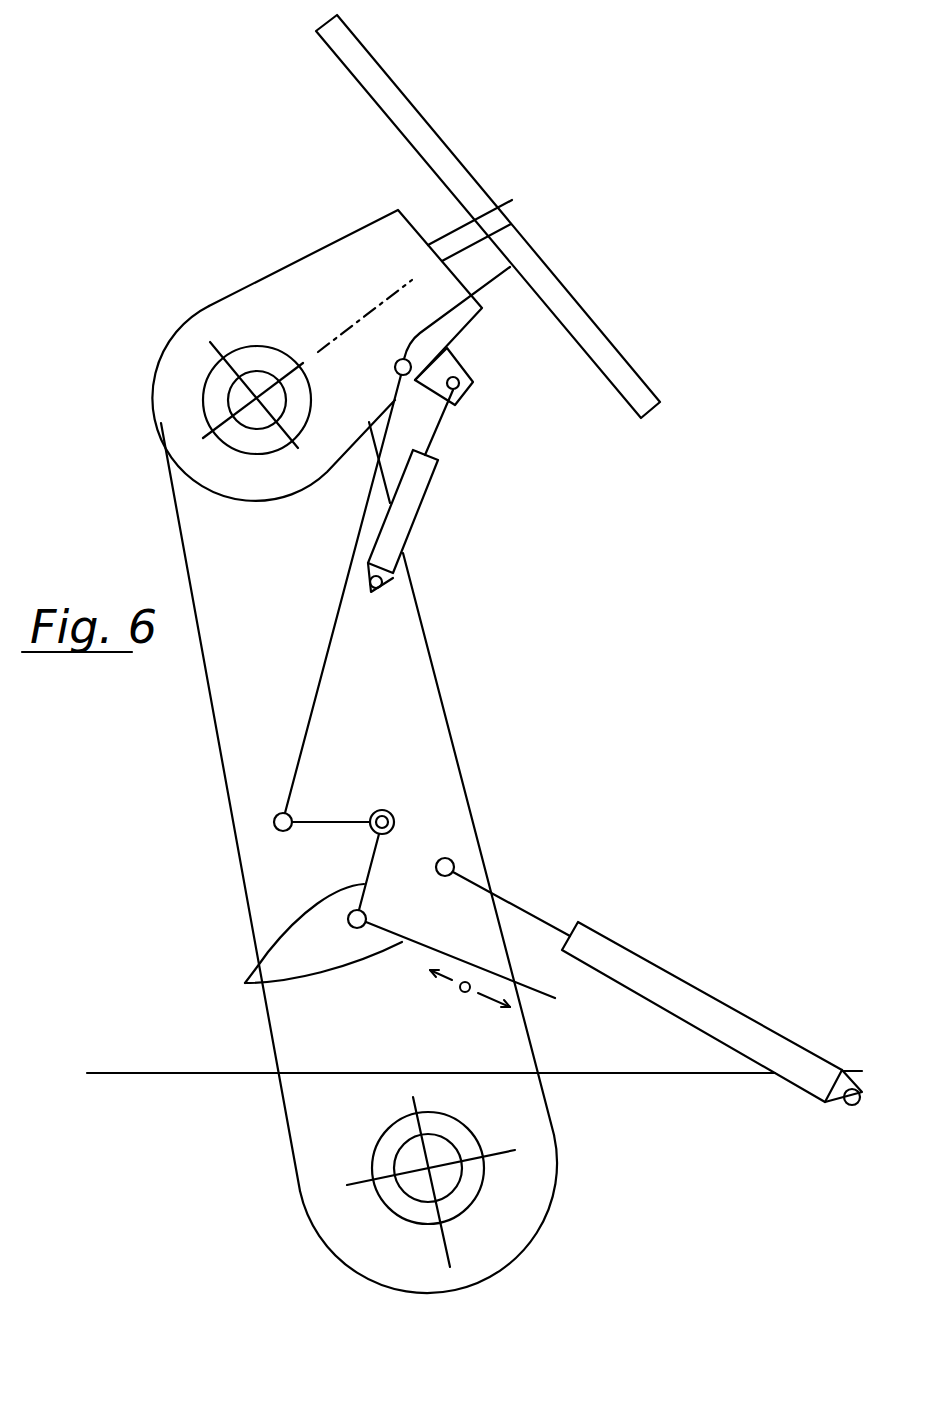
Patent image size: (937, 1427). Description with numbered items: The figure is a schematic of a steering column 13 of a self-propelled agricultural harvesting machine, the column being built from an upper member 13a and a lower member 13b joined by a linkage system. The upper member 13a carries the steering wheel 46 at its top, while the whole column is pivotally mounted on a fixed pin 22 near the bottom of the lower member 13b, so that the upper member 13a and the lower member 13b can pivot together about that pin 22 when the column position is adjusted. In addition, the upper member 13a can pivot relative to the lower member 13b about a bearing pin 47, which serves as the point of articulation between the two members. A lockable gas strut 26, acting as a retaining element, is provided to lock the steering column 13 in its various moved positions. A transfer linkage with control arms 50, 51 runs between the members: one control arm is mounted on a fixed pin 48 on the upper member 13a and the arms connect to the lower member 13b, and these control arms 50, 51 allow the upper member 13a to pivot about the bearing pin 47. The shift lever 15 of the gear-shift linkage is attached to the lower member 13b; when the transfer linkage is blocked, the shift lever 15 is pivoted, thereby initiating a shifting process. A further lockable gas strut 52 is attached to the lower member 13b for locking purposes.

The steering column 13 is at (351, 743).
The upper member 13a is at (325, 262).
The lower member 13b is at (427, 745).
The shift lever 15 is at (258, 981).
The pin 22 is at (403, 1155).
The lockable gas strut 26 is at (410, 510).
The steering wheel 46 is at (422, 132).
The bearing pin 47 is at (235, 395).
The fixed pin 48 is at (452, 268).
The control arm 50 is at (340, 589).
The control arm 51 is at (318, 820).
The further lockable gas strut 52 is at (660, 982).